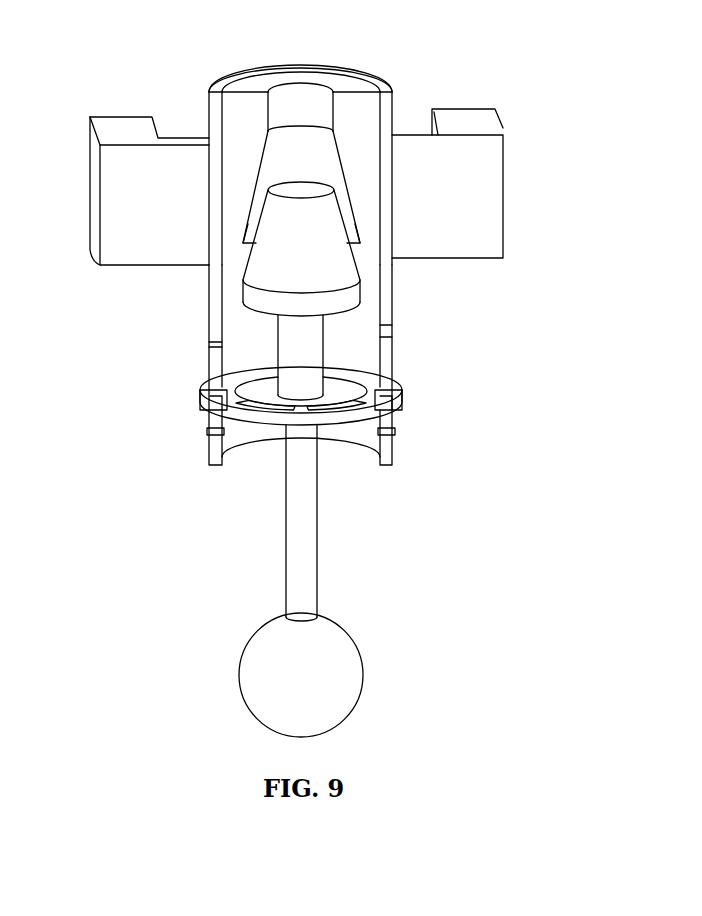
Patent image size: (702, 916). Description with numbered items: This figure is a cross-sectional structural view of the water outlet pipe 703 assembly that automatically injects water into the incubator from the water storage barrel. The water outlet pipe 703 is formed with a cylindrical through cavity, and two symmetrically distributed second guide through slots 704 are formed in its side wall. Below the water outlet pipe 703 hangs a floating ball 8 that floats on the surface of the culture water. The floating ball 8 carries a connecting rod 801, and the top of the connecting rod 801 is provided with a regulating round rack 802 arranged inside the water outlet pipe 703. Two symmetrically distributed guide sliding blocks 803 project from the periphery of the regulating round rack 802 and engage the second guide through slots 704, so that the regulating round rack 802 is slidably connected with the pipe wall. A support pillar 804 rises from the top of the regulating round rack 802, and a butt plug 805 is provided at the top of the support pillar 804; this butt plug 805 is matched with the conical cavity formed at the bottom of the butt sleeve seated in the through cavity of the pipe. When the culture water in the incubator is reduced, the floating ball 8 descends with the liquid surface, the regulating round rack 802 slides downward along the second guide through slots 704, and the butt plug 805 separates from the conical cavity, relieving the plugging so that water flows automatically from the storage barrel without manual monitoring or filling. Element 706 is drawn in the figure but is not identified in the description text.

The floating ball 8 is at (258, 668).
The water outlet pipe 703 is at (208, 120).
The second guide through slots 704 is at (209, 363).
The funnel guide 706 is at (355, 158).
The connecting rod 801 is at (307, 532).
The regulating round rack 802 is at (258, 405).
The guide sliding blocks 803 is at (401, 403).
The support pillar 804 is at (306, 349).
The butt plug 805 is at (305, 248).